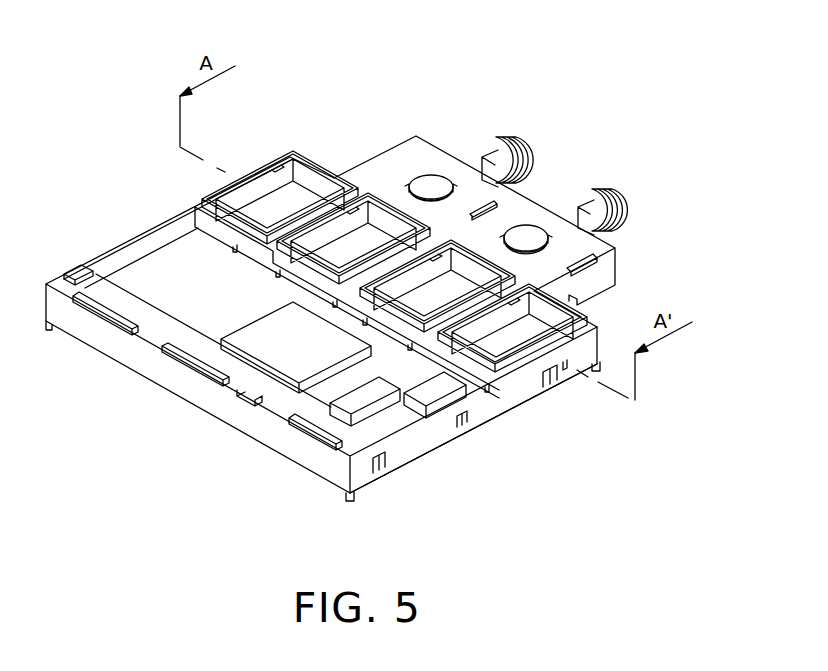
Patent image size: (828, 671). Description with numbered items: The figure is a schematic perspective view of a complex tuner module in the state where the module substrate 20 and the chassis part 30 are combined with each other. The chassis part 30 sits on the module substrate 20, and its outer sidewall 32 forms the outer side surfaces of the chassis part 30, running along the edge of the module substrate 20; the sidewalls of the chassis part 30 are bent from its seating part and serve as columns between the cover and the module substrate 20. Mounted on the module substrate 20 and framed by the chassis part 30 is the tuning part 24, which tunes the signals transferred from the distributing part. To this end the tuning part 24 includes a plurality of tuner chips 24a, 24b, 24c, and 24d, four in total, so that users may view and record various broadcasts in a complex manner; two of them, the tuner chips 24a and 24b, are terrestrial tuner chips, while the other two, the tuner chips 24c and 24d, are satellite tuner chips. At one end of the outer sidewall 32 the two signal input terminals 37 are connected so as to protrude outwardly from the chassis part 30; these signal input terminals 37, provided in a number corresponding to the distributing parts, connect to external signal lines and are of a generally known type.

The module substrate 20 is at (187, 308).
The tuning part 24 is at (637, 50).
The tuner chip 24a is at (284, 200).
The tuner chip 24b is at (363, 252).
The tuner chip 24c is at (435, 293).
The tuner chip 24d is at (524, 330).
The chassis part 30 is at (262, 448).
The outer sidewall 32 is at (437, 433).
The signal input terminal 37 is at (497, 152).